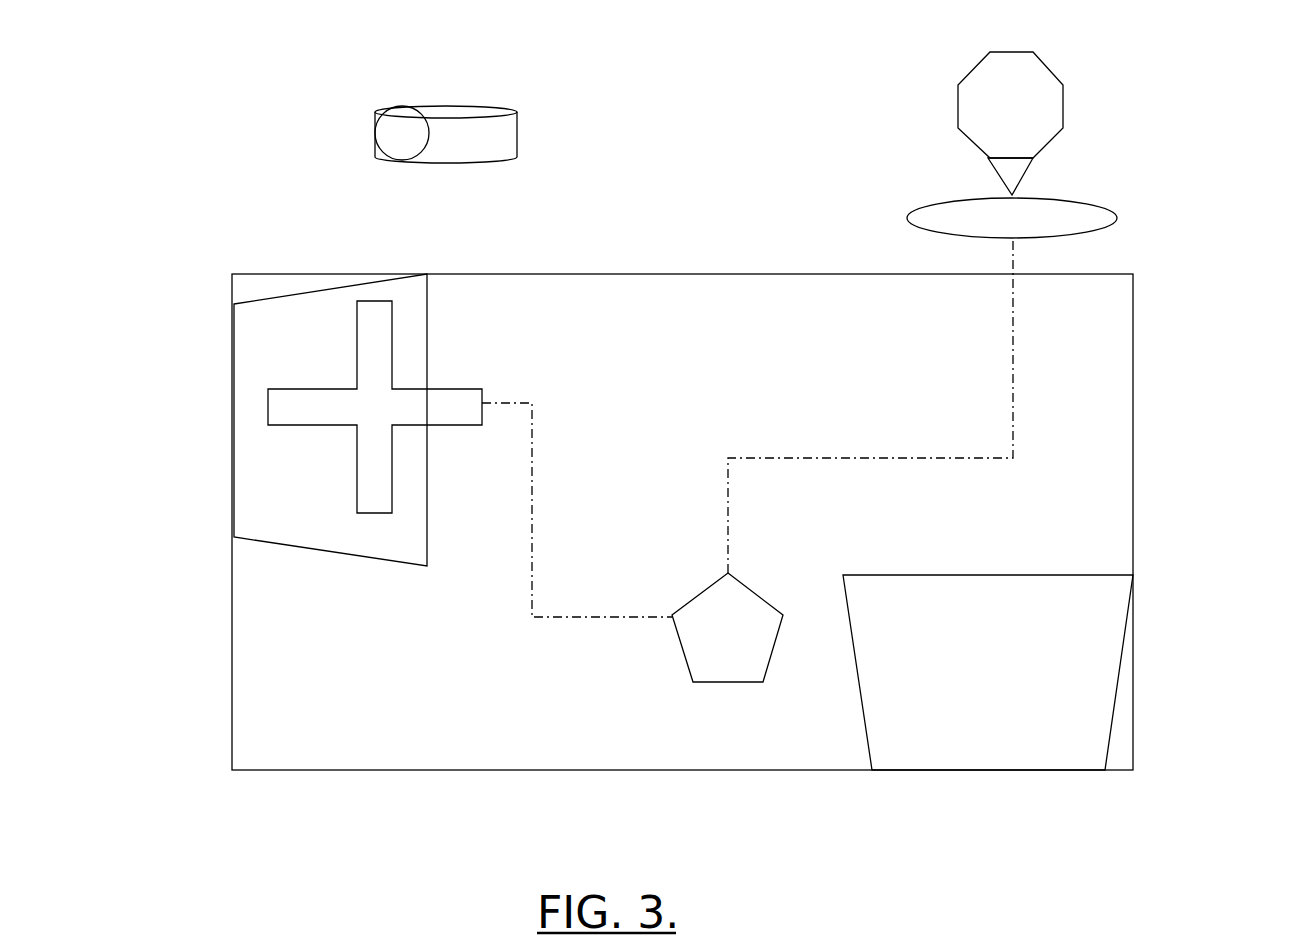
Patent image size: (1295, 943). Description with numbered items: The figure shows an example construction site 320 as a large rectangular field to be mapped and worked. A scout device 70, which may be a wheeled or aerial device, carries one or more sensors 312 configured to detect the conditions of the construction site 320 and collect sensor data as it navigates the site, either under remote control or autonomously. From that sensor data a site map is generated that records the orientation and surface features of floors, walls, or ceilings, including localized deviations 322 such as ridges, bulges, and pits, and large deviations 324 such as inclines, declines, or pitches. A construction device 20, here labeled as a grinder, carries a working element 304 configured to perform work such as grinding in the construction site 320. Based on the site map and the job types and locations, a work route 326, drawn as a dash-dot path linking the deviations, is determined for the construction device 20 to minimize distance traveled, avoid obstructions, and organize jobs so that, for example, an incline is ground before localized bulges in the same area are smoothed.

The construction device 20 is at (1029, 104).
The scout device 70 is at (444, 112).
The sensors 312 is at (360, 124).
The working element 304 is at (970, 205).
The construction site 320 is at (682, 563).
The localized deviations 322 is at (450, 568).
The large deviations 324 is at (762, 482).
The work route 326 is at (747, 404).